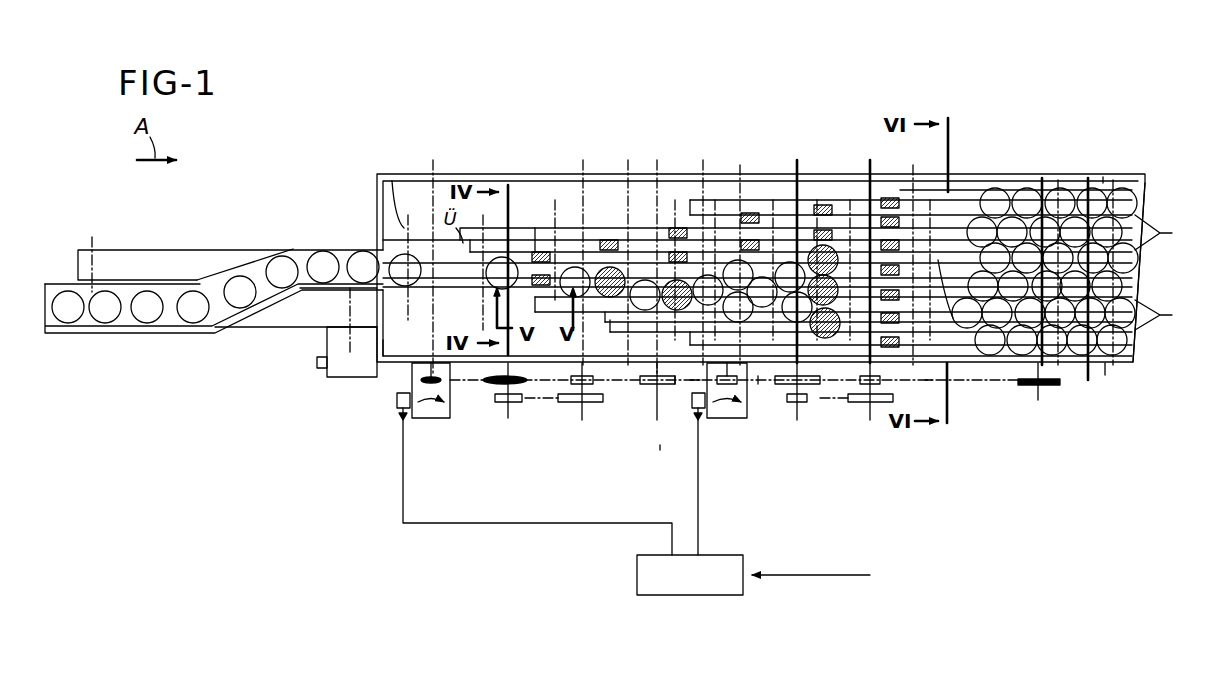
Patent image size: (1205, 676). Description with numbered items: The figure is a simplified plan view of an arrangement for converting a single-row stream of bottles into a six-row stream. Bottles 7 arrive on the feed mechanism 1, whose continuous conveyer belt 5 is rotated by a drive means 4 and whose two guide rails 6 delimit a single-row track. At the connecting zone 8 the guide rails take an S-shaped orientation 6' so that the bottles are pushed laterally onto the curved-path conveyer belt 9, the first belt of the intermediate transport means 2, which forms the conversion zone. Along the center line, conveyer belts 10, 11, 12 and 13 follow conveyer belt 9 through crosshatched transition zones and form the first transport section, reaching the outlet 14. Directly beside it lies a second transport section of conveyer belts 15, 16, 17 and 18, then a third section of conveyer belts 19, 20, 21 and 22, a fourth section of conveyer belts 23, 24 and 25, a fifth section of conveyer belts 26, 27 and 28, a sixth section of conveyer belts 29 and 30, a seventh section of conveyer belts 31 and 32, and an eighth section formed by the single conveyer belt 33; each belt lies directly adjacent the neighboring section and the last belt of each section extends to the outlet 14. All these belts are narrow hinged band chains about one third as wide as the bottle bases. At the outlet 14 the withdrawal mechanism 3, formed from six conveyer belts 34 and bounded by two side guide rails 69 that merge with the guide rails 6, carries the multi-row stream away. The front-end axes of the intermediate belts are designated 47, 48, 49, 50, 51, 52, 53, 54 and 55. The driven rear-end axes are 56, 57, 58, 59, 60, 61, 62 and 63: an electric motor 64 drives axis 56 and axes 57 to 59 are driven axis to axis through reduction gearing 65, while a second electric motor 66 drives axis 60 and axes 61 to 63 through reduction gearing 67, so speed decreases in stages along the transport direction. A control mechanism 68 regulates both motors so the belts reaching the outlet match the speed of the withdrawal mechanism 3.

The feed mechanism 1 is at (131, 230).
The intermediate transport means 2 is at (660, 450).
The withdrawal mechanism 3 is at (1135, 160).
The drive means 4 is at (333, 372).
The conveyer belt 5 is at (287, 322).
The guide rails 6 is at (214, 294).
The S-shaped orientation of guide rails 6' is at (245, 291).
The bottles 7 is at (103, 317).
The connecting zone 8 is at (348, 213).
The curved-path conveyer belt 9 is at (427, 233).
The conveyer belt 10 is at (559, 240).
The conveyer belt 11 is at (627, 250).
The conveyer belt 12 is at (880, 210).
The conveyer belt 13 is at (950, 250).
The outlet 14 is at (1052, 150).
The conveyer belt 15 is at (516, 240).
The conveyer belt 16 is at (594, 245).
The conveyer belt 17 is at (740, 200).
The conveyer belt 18 is at (953, 318).
The conveyer belt 19 is at (568, 200).
The conveyer belt 20 is at (690, 205).
The conveyer belt 21 is at (800, 190).
The conveyer belt 22 is at (1000, 230).
The conveyer belt 23 is at (612, 230).
The conveyer belt 24 is at (700, 185).
The conveyer belt 25 is at (862, 185).
The conveyer belt 26 is at (637, 185).
The conveyer belt 27 is at (775, 200).
The conveyer belt 28 is at (1020, 185).
The conveyer belt 29 is at (840, 200).
The conveyer belt 30 is at (890, 200).
The conveyer belt 31 is at (810, 180).
The conveyer belt 32 is at (983, 195).
The conveyer belt 33 is at (925, 190).
The conveyer belts 34 is at (1167, 272).
The axis 47 is at (92, 237).
The axis 48 is at (392, 215).
The axis 49 is at (480, 306).
The axis 50 is at (563, 381).
The axis 51 is at (642, 391).
The axis 52 is at (655, 388).
The axis 53 is at (770, 388).
The axis 54 is at (845, 388).
The axis 55 is at (932, 380).
The driven axis 56 is at (405, 364).
The driven axis 57 is at (510, 410).
The driven axis 58 is at (583, 418).
The driven axis 59 is at (664, 416).
The driven axis 60 is at (735, 185).
The driven axis 61 is at (800, 420).
The driven axis 62 is at (868, 420).
The driven axis 63 is at (1040, 388).
The electric motor 64 is at (437, 420).
The reduction gearing 65 is at (480, 392).
The second electric motor 66 is at (728, 420).
The reduction gearing 67 is at (758, 390).
The control mechanism 68 is at (637, 563).
The side guide rails 69 is at (1103, 177).